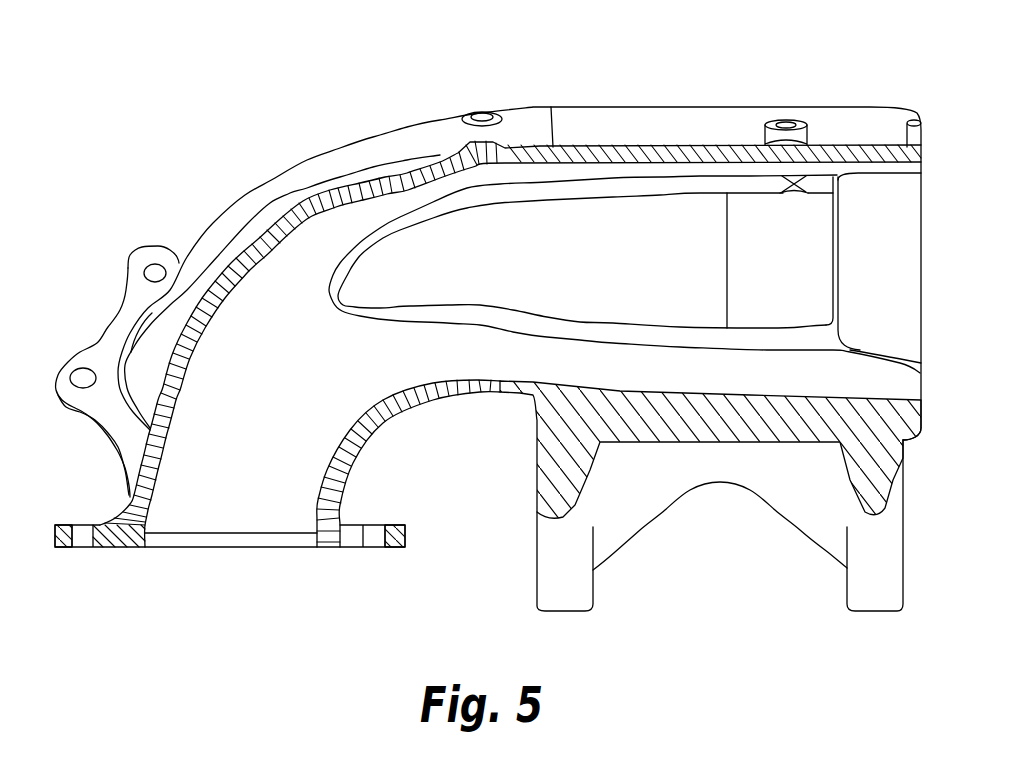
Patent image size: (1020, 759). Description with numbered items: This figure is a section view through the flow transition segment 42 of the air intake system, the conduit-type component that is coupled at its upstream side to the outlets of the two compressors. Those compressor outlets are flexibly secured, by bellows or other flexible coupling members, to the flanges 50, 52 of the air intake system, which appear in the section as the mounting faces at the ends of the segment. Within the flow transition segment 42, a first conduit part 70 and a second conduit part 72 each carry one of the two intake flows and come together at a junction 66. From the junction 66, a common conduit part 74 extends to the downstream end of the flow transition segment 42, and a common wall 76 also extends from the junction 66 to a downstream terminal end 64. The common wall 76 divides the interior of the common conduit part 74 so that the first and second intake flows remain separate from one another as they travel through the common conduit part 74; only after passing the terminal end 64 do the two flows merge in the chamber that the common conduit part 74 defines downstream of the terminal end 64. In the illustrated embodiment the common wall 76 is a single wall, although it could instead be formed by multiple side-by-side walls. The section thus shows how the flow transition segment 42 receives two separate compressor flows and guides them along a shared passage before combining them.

The flow transition segment 42 is at (218, 145).
The flange 50 is at (98, 547).
The flange 52 is at (70, 363).
The downstream terminal end 64 is at (840, 275).
The junction 66 is at (325, 292).
The first conduit part 70 is at (387, 175).
The second conduit part 72 is at (203, 225).
The common conduit part 74 is at (900, 130).
The common wall 76 is at (588, 243).